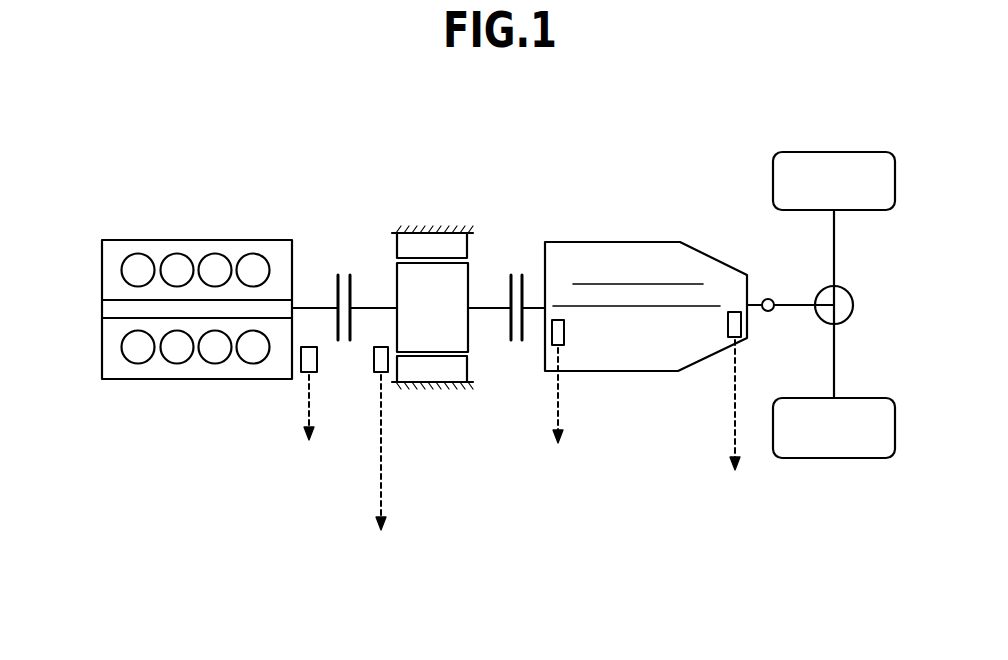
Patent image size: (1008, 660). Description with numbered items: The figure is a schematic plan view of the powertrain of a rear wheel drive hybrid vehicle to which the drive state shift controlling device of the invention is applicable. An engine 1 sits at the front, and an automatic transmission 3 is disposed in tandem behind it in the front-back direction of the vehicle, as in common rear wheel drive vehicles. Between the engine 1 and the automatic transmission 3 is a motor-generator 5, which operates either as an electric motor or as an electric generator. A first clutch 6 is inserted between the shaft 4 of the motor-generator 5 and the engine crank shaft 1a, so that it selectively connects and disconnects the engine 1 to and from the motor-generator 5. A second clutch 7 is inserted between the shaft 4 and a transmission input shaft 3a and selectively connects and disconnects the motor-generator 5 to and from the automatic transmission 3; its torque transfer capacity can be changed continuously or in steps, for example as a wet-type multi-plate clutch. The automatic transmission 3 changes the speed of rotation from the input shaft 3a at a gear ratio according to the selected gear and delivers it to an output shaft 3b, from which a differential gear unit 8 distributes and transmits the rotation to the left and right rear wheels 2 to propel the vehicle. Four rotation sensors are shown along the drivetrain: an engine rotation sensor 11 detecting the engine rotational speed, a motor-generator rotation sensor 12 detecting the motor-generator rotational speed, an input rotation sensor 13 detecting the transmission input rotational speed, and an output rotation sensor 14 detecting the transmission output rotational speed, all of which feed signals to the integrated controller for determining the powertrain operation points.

The engine 1 is at (178, 240).
The engine crank shaft 1a is at (317, 306).
The rear wheels 2 is at (822, 152).
The automatic transmission 3 is at (632, 242).
The transmission input shaft 3a is at (531, 306).
The output shaft 3b is at (758, 303).
The shaft 4 is at (493, 306).
The motor-generator 5 is at (420, 232).
The first clutch 6 is at (342, 276).
The second clutch 7 is at (516, 344).
The differential gear unit 8 is at (853, 303).
The engine rotation sensor 11 is at (304, 375).
The motor-generator rotation sensor 12 is at (378, 375).
The input rotation sensor 13 is at (565, 332).
The output rotation sensor 14 is at (730, 338).